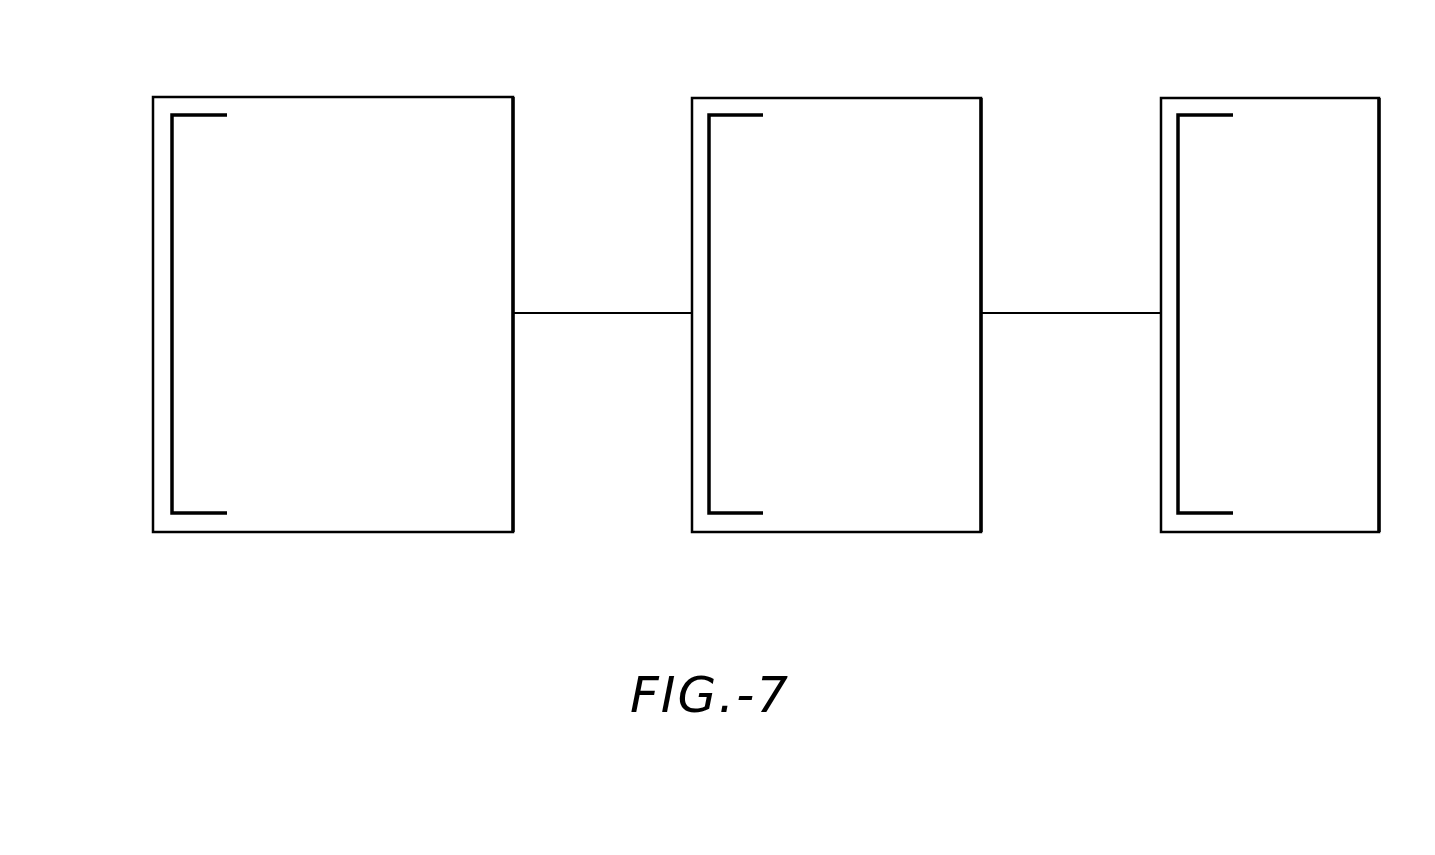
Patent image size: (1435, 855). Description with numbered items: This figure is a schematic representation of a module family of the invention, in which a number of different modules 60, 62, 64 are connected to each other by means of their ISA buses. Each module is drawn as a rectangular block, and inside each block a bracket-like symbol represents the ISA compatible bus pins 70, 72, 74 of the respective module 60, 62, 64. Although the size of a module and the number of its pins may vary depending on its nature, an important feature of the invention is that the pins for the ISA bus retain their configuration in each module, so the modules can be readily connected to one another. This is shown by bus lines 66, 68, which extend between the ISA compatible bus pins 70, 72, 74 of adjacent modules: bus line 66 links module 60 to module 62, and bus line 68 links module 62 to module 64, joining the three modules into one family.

The module 60 is at (523, 91).
The module 62 is at (989, 91).
The module 64 is at (1390, 91).
The bus line 66 is at (604, 304).
The bus line 68 is at (1071, 304).
The ISA compatible bus pins 70 is at (172, 376).
The ISA compatible bus pins 72 is at (709, 383).
The ISA compatible bus pins 74 is at (1178, 378).